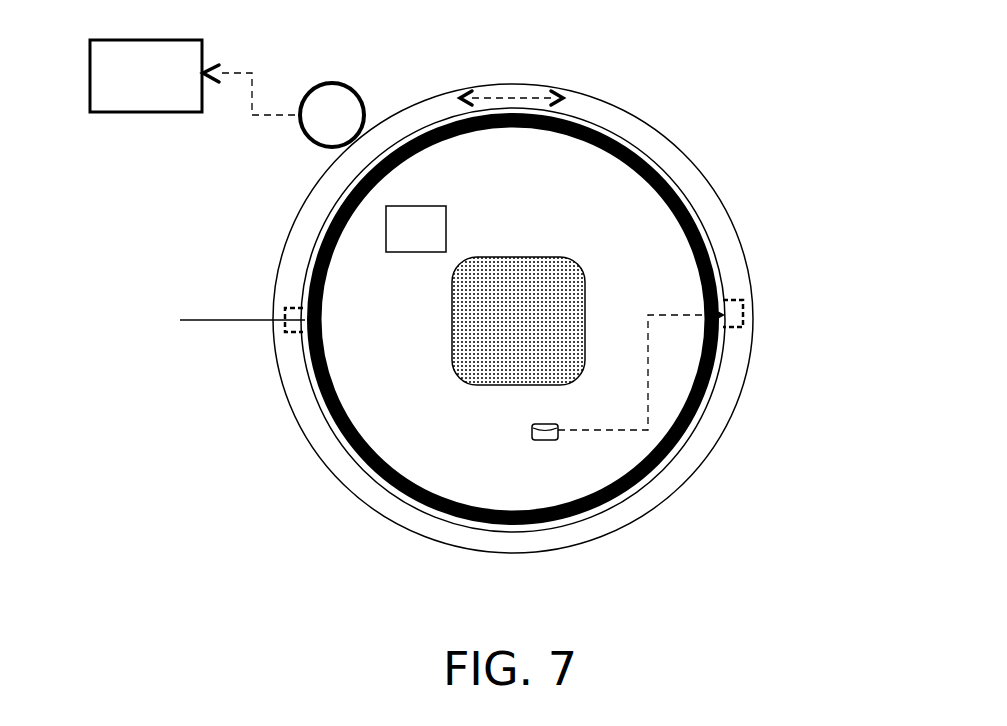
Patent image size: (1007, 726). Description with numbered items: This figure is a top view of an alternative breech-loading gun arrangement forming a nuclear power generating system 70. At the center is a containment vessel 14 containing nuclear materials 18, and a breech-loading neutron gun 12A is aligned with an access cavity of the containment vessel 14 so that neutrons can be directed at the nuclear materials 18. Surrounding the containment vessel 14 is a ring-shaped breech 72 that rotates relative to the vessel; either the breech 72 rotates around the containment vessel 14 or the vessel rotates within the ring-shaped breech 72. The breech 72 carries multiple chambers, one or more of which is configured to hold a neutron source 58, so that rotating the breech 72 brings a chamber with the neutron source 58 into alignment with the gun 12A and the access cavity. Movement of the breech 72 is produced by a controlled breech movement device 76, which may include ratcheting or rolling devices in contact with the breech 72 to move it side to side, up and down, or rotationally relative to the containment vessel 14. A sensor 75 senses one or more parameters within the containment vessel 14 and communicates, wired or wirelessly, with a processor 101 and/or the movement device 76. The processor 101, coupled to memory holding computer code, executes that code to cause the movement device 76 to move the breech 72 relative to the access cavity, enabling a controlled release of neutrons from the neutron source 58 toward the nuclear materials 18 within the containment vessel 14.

The nuclear power generating system 70 is at (533, 631).
The breech 72 is at (732, 242).
The containment vessel 14 is at (673, 190).
The processor 101 is at (124, 78).
The controlled breech movement device 76 is at (318, 129).
The breech-loading neutron gun 12A is at (203, 319).
The sensor 75 is at (402, 243).
The nuclear materials 18 is at (509, 337).
The neutron source 58 is at (530, 433).